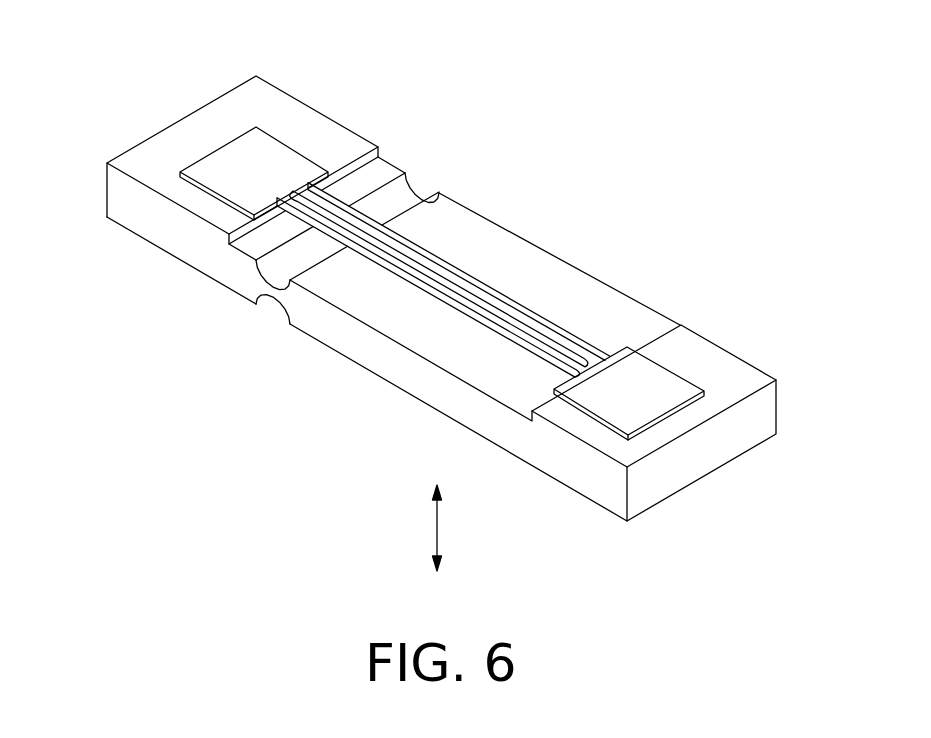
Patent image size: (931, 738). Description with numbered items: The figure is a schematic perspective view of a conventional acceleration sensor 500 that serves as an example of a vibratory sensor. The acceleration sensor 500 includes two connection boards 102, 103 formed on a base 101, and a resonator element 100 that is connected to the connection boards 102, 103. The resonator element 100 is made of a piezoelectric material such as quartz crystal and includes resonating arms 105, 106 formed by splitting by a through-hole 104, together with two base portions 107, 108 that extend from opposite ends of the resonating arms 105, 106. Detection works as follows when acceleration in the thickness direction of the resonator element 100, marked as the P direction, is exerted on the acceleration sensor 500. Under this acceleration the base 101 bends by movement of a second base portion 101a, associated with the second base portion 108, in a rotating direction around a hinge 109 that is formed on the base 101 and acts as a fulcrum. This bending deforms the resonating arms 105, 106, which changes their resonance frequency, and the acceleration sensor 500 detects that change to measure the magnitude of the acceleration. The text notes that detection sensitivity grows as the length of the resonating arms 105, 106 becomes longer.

The acceleration sensor 500 is at (803, 193).
The resonator element 100 is at (302, 130).
The base 101 is at (460, 203).
The second base portion 101a is at (536, 450).
The connection board 102 is at (738, 368).
The connection board 103 is at (138, 150).
The through-hole 104 is at (458, 290).
The resonating arm 105 is at (522, 307).
The resonating arm 106 is at (440, 302).
The base portion 107 is at (244, 150).
The base portion 108 is at (628, 377).
The hinge 109 is at (269, 302).